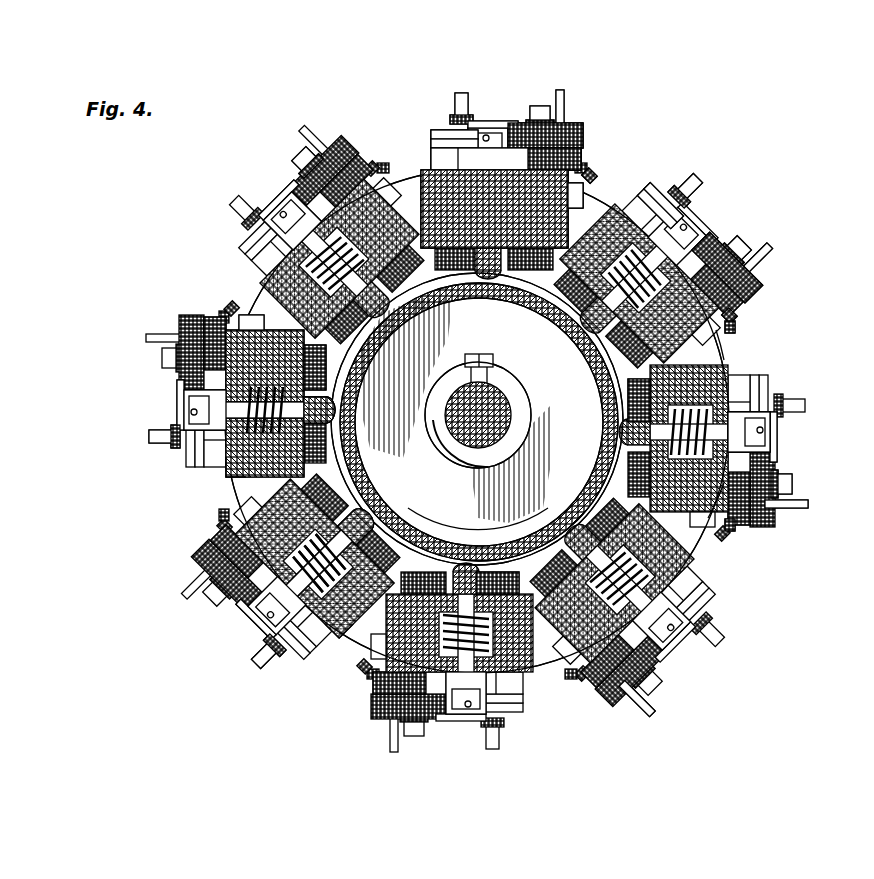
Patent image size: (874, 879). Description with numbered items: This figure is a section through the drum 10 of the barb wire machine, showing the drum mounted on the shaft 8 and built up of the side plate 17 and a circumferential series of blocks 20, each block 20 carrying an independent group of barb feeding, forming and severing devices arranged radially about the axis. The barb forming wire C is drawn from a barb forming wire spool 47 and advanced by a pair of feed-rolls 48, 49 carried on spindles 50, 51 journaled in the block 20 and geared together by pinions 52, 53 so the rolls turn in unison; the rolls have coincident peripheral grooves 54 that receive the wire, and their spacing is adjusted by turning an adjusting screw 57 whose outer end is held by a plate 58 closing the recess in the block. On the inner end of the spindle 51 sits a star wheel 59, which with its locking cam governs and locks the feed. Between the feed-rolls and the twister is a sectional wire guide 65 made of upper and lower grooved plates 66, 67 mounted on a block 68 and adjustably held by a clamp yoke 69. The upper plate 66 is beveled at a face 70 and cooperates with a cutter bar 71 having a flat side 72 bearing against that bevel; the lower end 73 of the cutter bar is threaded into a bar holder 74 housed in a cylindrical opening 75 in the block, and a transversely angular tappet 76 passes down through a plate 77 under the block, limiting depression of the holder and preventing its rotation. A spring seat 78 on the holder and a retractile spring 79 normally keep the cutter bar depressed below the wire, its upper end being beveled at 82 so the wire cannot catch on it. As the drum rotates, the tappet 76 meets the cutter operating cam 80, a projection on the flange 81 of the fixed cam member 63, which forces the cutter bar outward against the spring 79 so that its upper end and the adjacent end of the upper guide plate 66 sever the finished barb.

The shaft 8 is at (496, 392).
The drum 10 is at (533, 187).
The side plate 17 is at (714, 343).
The block 20 is at (560, 585).
The barb forming wire spool 47 is at (722, 624).
The feed-roll 48 is at (748, 270).
The feed-roll 49 is at (428, 122).
The spindle 50 is at (737, 238).
The spindle 51 is at (688, 187).
The pinion 52 is at (577, 148).
The pinion 53 is at (420, 153).
The peripheral groove 54 is at (748, 279).
The adjusting screw 57 is at (722, 513).
The plate 58 is at (676, 512).
The star wheel 59 is at (610, 392).
The fixed cam member 63 is at (478, 434).
The sectional wire guide 65 is at (262, 178).
The upper grooved plate 66 is at (272, 162).
The lower grooved plate 67 is at (278, 170).
The block 68 is at (322, 150).
The clamp yoke 69 is at (240, 180).
The beveled face 70 is at (172, 410).
The cutter bar 71 is at (206, 462).
The flat side 72 is at (258, 606).
The lower end of cutter bar 73 is at (387, 581).
The bar holder 74 is at (347, 597).
The cylindrical opening 75 is at (332, 623).
The tappet 76 is at (358, 525).
The plate 77 is at (323, 637).
The spring seat 78 is at (293, 361).
The cutter bar retractile spring 79 is at (250, 630).
The cutter operating cam 80 is at (455, 531).
The flange 81 is at (352, 470).
The beveled end 82 is at (273, 653).
The barb forming wire C is at (683, 627).